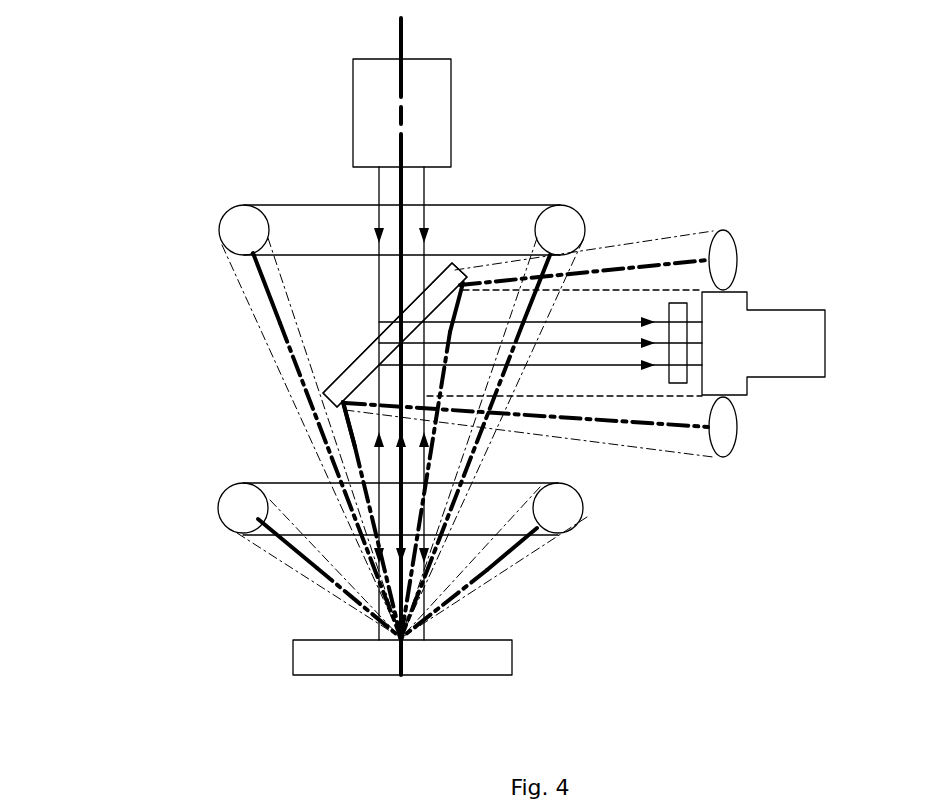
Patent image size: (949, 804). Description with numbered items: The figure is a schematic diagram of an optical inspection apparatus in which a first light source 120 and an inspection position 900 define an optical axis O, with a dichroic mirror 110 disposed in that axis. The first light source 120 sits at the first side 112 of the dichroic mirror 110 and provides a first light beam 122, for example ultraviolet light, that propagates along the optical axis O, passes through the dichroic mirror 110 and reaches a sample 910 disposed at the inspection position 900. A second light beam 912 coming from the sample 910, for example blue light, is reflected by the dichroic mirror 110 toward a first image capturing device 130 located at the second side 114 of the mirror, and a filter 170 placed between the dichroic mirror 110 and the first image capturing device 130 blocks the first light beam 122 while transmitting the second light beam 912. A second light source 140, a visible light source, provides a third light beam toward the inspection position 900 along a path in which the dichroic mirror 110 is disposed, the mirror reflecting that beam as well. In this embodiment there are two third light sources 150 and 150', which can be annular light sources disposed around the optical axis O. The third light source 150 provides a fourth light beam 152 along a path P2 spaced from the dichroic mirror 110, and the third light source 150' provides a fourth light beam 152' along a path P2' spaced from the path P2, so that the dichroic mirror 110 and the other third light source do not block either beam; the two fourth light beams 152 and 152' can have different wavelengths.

The optical axis O is at (403, 37).
The first light source 120 is at (430, 105).
The first light beam 122 is at (426, 205).
The third light source 150 is at (402, 197).
The fourth light beam 152 is at (355, 438).
The path P2 is at (221, 310).
The dichroic mirror 110 is at (170, 338).
The first side 112 is at (352, 364).
The second side 114 is at (350, 432).
The second light beam 912 is at (620, 320).
The second light source 140 is at (726, 258).
The first image capturing device 130 is at (790, 348).
The filter 170 is at (681, 382).
The third light source 150' is at (446, 560).
The fourth light beam 152' is at (280, 569).
The path P2' is at (282, 587).
The sample 910 is at (490, 662).
The inspection position 900 is at (401, 640).